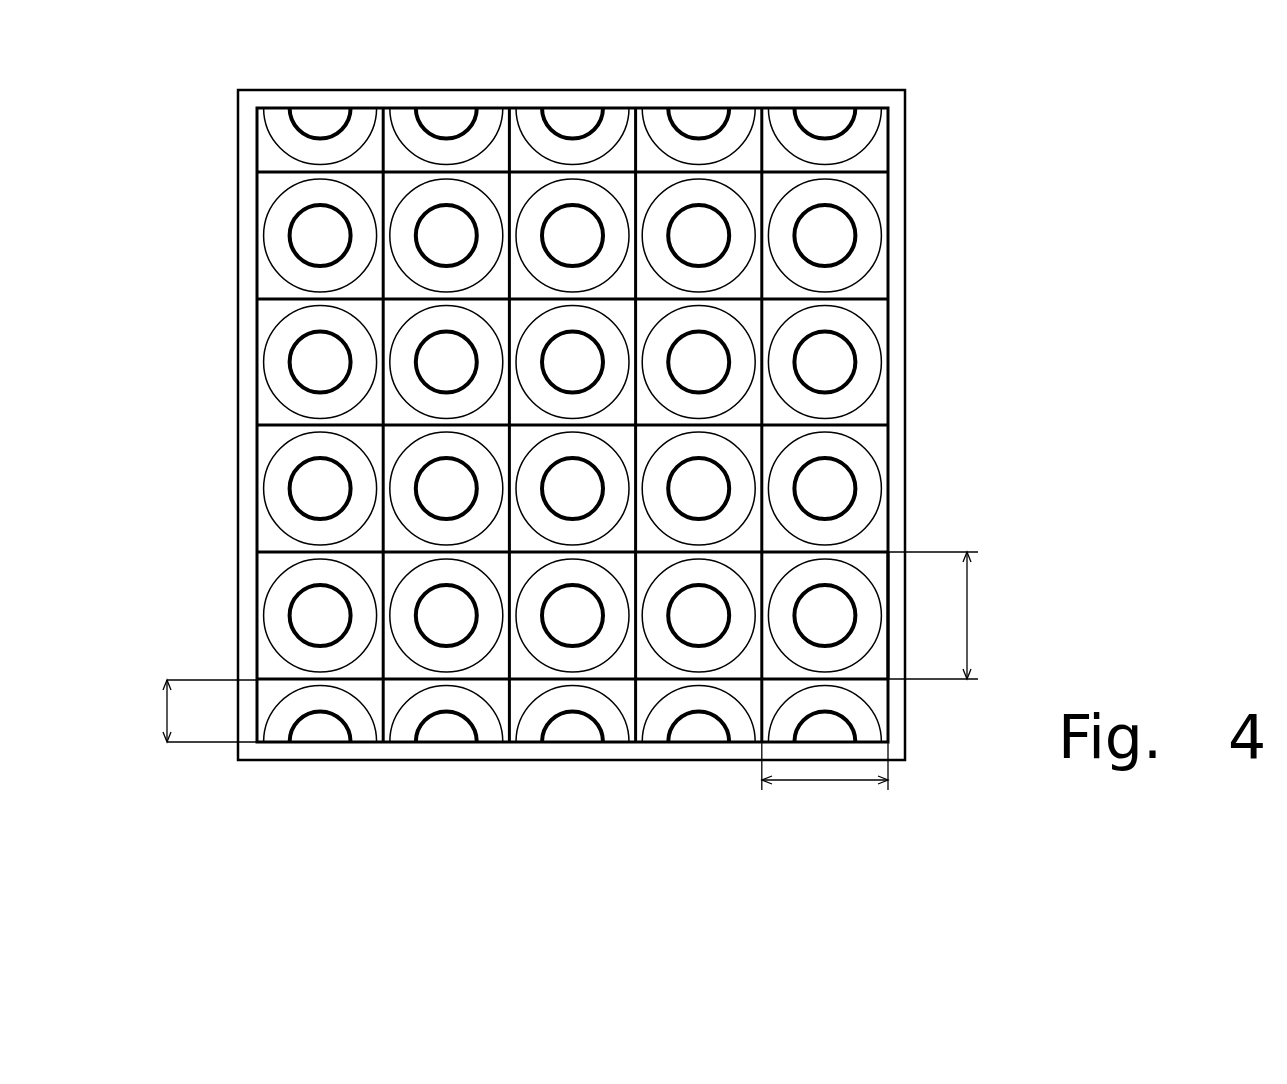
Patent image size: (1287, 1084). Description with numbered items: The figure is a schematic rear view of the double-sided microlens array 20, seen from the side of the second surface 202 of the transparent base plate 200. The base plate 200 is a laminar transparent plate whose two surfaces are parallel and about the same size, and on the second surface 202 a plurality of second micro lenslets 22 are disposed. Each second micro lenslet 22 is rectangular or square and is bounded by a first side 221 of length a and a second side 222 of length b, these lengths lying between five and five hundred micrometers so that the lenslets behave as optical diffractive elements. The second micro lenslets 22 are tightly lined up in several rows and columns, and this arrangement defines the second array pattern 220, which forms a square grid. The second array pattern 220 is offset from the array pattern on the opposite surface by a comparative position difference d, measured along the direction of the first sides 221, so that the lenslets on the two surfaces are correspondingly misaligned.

The double-sided microlens array 20 is at (279, 59).
The transparent base plate 200 is at (238, 380).
The second surface 202 is at (905, 92).
The second array pattern 220 is at (888, 173).
The second micro lenslet 22 is at (882, 560).
The first side 221 is at (888, 622).
The second side 222 is at (865, 683).